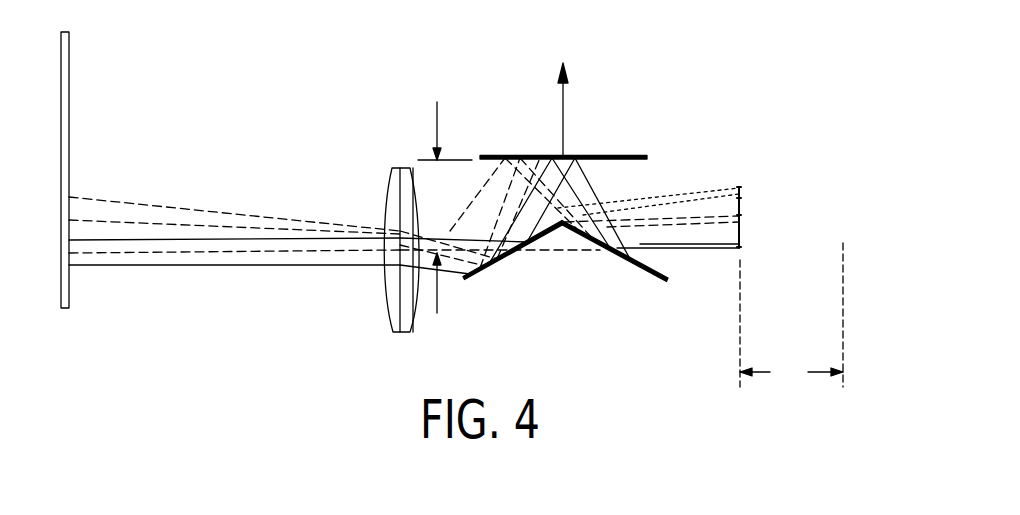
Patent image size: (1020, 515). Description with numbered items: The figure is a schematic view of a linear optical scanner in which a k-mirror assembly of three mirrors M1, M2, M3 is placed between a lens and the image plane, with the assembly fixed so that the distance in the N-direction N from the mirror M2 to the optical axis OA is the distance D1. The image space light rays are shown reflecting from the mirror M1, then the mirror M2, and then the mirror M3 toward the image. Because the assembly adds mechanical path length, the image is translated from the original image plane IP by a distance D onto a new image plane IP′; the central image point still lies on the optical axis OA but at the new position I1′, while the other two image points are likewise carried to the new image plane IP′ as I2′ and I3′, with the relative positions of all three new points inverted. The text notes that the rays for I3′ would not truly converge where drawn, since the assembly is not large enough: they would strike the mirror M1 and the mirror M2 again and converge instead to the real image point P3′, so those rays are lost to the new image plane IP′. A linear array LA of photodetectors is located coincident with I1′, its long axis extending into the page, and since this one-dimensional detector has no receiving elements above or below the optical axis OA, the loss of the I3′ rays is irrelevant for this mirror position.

The optical axis OA is at (345, 231).
The real image point P3′ is at (447, 233).
The distance from mirror M2 to the optical axis D1 is at (437, 104).
The N-direction N is at (563, 115).
The mirror M2 is at (612, 155).
The mirror M1 is at (490, 276).
The mirror M3 is at (616, 273).
The linear array of photodetectors LA is at (739, 249).
The translated image point I3' I3′ is at (739, 188).
The new image plane IP′ is at (740, 200).
The translated image point I2' I2′ is at (740, 216).
The translated image point I1' I1′ is at (741, 248).
The original image plane IP is at (844, 283).
The image translation distance D is at (791, 324).